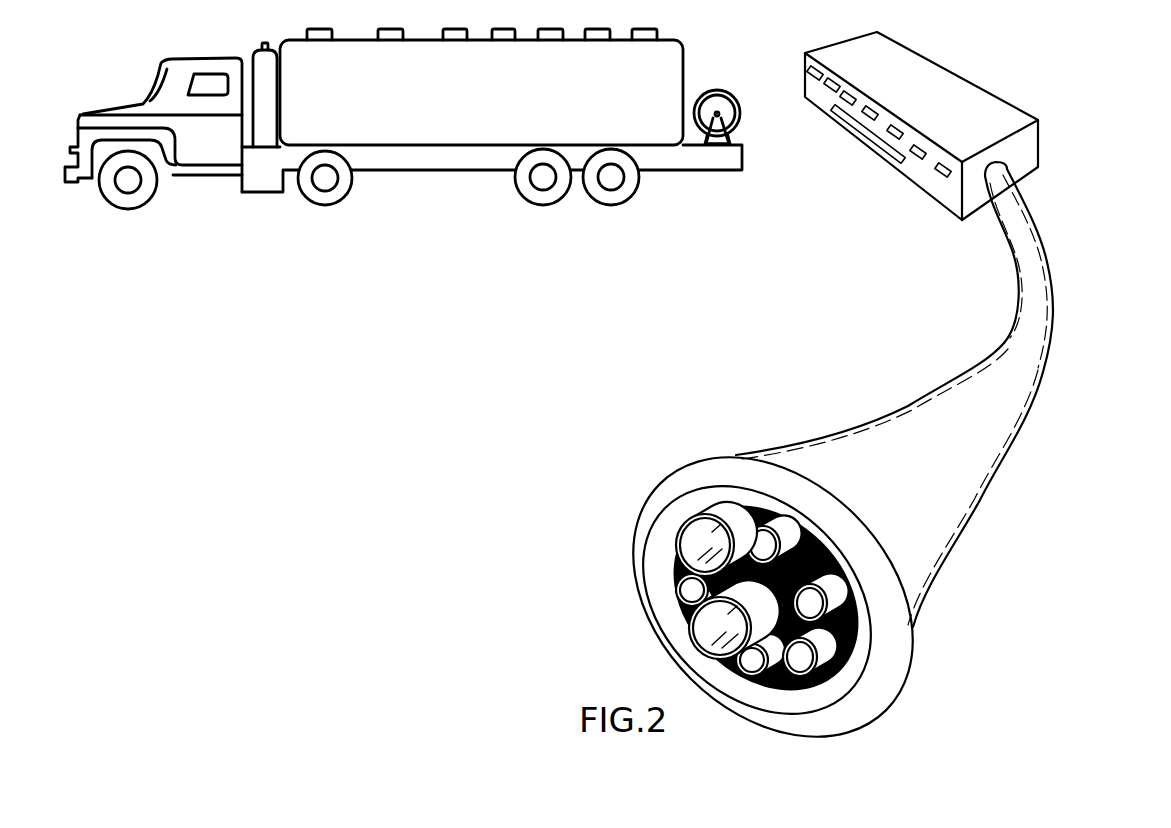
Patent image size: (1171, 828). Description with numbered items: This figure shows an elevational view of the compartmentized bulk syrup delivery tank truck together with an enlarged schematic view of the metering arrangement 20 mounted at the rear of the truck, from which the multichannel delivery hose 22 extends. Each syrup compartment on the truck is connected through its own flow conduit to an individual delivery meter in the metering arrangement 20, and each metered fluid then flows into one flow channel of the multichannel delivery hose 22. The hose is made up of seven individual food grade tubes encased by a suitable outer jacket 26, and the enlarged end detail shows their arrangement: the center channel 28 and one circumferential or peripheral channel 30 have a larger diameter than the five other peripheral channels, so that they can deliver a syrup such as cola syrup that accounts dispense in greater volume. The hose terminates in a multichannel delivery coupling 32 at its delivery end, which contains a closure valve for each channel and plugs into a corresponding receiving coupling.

The metering arrangement 20 is at (966, 68).
The multichannel delivery hose 22 is at (1057, 263).
The outer jacket 26 is at (985, 479).
The center channel 28 is at (694, 640).
The peripheral channel 30 is at (674, 537).
The multichannel delivery coupling 32 is at (913, 688).